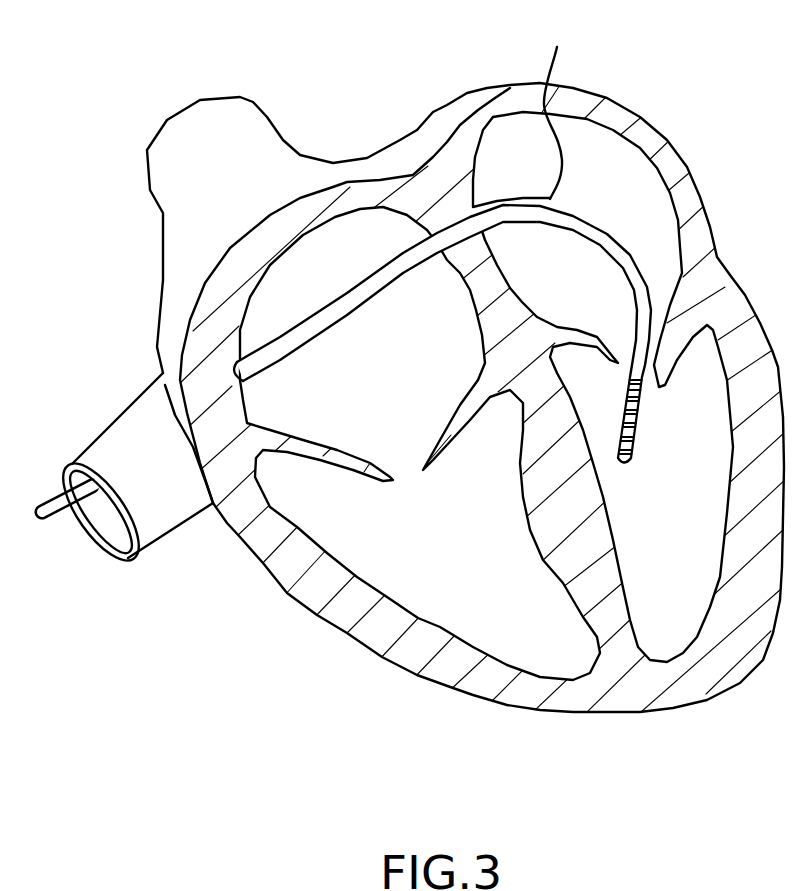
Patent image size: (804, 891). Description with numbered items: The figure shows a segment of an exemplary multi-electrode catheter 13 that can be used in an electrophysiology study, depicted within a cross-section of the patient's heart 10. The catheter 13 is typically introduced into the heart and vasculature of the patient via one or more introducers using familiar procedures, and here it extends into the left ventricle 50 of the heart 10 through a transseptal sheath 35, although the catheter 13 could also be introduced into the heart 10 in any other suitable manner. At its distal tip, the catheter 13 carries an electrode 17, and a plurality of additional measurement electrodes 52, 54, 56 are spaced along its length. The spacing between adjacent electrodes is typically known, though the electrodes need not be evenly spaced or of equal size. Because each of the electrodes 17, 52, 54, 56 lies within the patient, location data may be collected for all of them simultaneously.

The heart 10 is at (651, 126).
The transseptal sheath 35 is at (524, 110).
The left ventricle 50 is at (707, 353).
The measurement electrode 52 is at (630, 447).
The measurement electrode 54 is at (633, 427).
The measurement electrode 56 is at (634, 406).
The multi-electrode catheter 13 is at (627, 460).
The electrode 17 is at (623, 463).